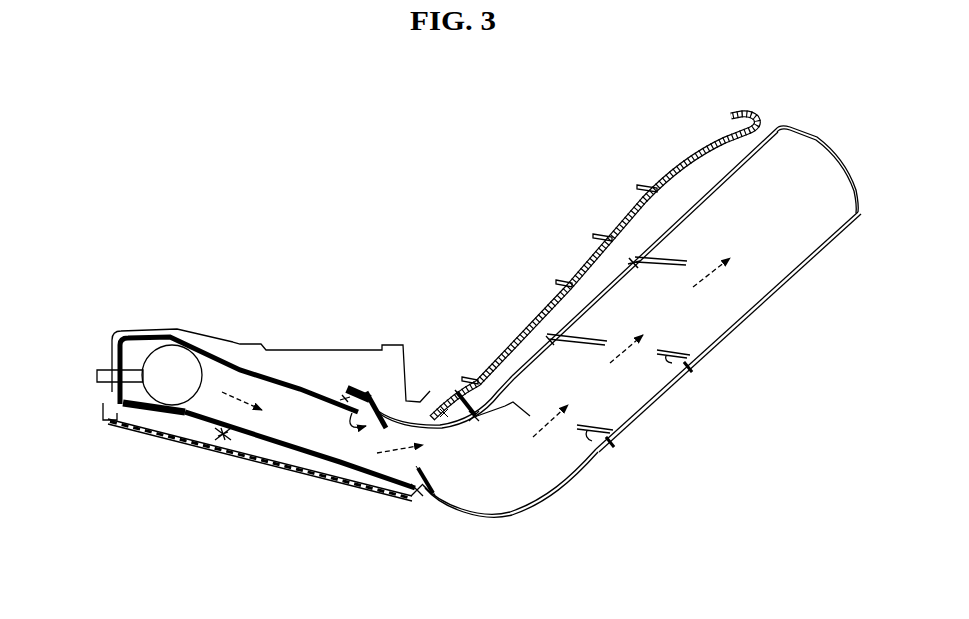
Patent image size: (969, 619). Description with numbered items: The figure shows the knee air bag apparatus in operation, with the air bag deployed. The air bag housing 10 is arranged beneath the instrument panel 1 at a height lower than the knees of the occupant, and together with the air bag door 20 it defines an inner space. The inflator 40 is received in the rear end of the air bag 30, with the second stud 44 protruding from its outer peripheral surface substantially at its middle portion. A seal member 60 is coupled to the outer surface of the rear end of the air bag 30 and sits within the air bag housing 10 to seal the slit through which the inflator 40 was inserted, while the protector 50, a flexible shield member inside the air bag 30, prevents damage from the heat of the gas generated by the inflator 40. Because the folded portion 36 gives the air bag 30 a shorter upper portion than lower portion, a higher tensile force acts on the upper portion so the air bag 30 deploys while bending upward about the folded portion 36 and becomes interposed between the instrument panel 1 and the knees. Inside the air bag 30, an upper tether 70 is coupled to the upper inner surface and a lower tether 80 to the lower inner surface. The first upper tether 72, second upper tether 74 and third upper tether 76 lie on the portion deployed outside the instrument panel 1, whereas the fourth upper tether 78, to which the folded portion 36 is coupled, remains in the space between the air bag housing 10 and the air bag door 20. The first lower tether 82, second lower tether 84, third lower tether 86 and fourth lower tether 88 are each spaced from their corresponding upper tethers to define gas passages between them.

The instrument panel 1 is at (676, 168).
The air bag housing 10 is at (288, 350).
The air bag door 20 is at (268, 479).
The air bag 30 is at (238, 372).
The folded portion 36 is at (342, 386).
The inflator 40 is at (175, 378).
The second stud 44 is at (130, 382).
The protector 50 is at (328, 403).
The seal member 60 is at (112, 362).
The upper tether 70 is at (514, 240).
The first upper tether 72 is at (633, 263).
The second upper tether 74 is at (577, 320).
The third upper tether 76 is at (476, 414).
The fourth upper tether 78 is at (458, 392).
The lower tether 80 is at (757, 457).
The first lower tether 82 is at (765, 312).
The second lower tether 84 is at (668, 362).
The third lower tether 86 is at (591, 442).
The fourth lower tether 88 is at (433, 478).